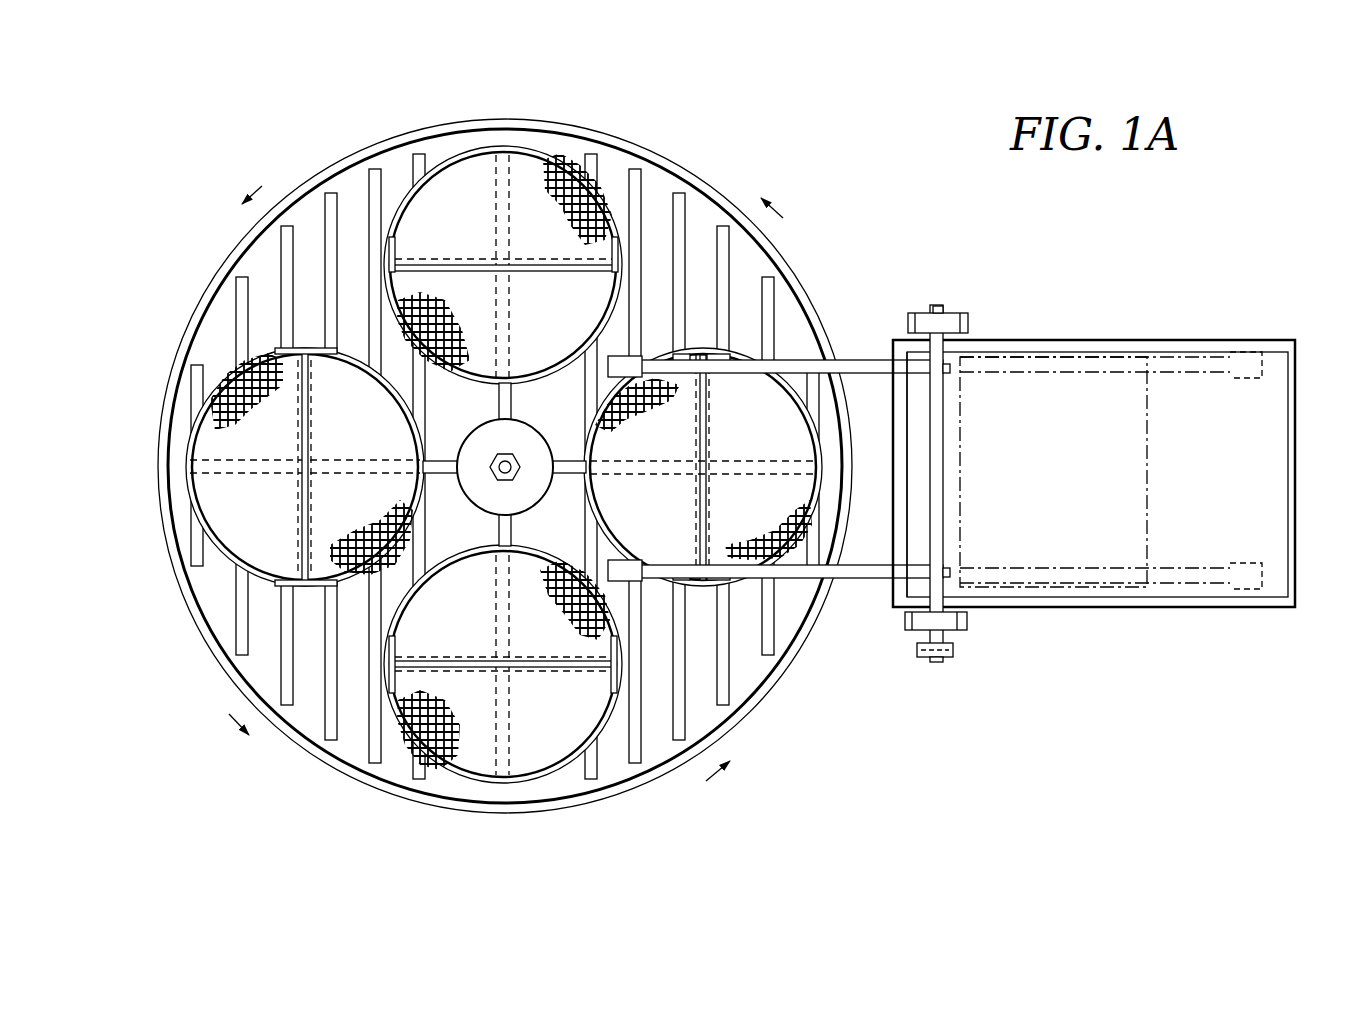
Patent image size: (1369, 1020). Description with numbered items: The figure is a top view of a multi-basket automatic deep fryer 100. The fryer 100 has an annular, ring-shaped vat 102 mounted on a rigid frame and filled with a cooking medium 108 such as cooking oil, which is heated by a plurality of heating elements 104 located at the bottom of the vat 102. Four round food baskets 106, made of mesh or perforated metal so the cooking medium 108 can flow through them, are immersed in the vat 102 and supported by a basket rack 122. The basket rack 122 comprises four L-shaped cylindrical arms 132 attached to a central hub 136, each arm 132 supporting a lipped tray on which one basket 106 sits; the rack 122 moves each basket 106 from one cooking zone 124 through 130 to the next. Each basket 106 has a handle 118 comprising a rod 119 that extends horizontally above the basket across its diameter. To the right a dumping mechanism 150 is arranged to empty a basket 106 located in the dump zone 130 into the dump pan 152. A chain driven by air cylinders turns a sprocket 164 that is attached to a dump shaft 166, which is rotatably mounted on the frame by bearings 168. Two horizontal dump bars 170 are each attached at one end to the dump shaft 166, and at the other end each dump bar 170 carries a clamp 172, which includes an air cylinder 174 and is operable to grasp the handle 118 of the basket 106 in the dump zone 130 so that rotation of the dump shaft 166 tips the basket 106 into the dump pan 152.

The multi-basket automatic deep fryer 100 is at (198, 88).
The vat 102 is at (306, 759).
The heating elements 104 is at (420, 152).
The food baskets 106 is at (492, 470).
The cooking medium 108 is at (436, 376).
The handle 118 is at (710, 445).
The rod 119 is at (702, 488).
The basket rack 122 is at (527, 445).
The cooking zone 124 is at (531, 85).
The dump zone 130 is at (1071, 531).
The arms 132 is at (498, 215).
The central hub 136 is at (484, 504).
The dumping mechanism 150 is at (862, 216).
The dump pan 152 is at (1296, 505).
The sprocket 164 is at (945, 662).
The dump shaft 166 is at (943, 440).
The bearings 168 is at (958, 313).
The dump bars 170 is at (793, 360).
The clamp 172 is at (706, 356).
The air cylinder 174 is at (625, 357).